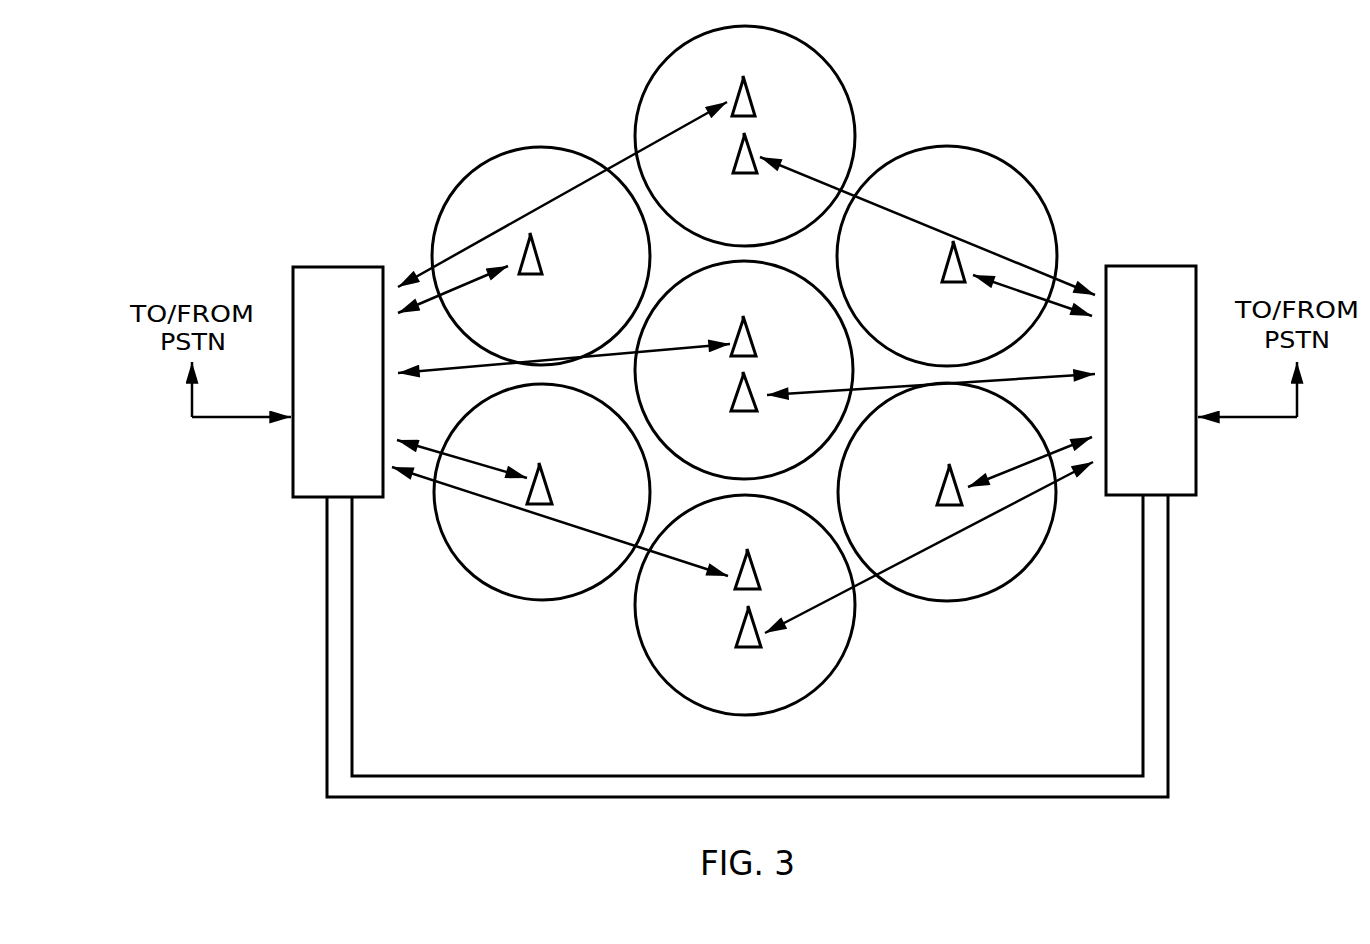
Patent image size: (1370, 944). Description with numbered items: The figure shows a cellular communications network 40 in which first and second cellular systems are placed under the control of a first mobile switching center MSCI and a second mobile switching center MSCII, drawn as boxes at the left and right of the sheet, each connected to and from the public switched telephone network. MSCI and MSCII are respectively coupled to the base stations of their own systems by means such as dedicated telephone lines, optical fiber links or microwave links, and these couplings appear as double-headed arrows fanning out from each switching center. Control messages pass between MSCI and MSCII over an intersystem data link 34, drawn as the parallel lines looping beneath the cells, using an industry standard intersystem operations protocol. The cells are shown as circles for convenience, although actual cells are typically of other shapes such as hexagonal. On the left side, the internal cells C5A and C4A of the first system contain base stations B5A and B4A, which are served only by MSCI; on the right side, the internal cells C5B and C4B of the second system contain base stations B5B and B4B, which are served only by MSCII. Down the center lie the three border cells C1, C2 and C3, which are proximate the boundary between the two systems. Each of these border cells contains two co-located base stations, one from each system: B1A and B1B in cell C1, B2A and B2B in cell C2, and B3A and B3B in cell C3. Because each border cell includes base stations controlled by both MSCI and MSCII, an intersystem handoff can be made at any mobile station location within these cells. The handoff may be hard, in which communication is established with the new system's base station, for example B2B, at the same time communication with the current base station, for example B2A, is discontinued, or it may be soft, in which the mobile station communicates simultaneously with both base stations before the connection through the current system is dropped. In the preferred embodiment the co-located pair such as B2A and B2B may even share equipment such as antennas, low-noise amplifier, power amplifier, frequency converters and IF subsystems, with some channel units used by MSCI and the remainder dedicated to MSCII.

The cellular communications network 40 is at (1190, 139).
The intersystem data link 34 is at (1168, 640).
The first mobile switching center MSCI is at (338, 382).
The second mobile switching center MSCII is at (1151, 380).
The border cell C1 is at (745, 136).
The border cell C2 is at (744, 370).
The border cell C3 is at (745, 605).
The cell of first cellular system C4A is at (542, 492).
The cell of second cellular system C4B is at (947, 492).
The cell of first cellular system C5A is at (541, 256).
The cell of second cellular system C5B is at (947, 256).
The base station B1A is at (755, 88).
The base station B1B is at (738, 148).
The base station B2A is at (754, 328).
The base station B2B is at (738, 388).
The base station B3A is at (758, 562).
The base station B3B is at (742, 623).
The base station B4A is at (556, 493).
The base station B4B is at (930, 496).
The base station B5A is at (548, 265).
The base station B5B is at (935, 273).